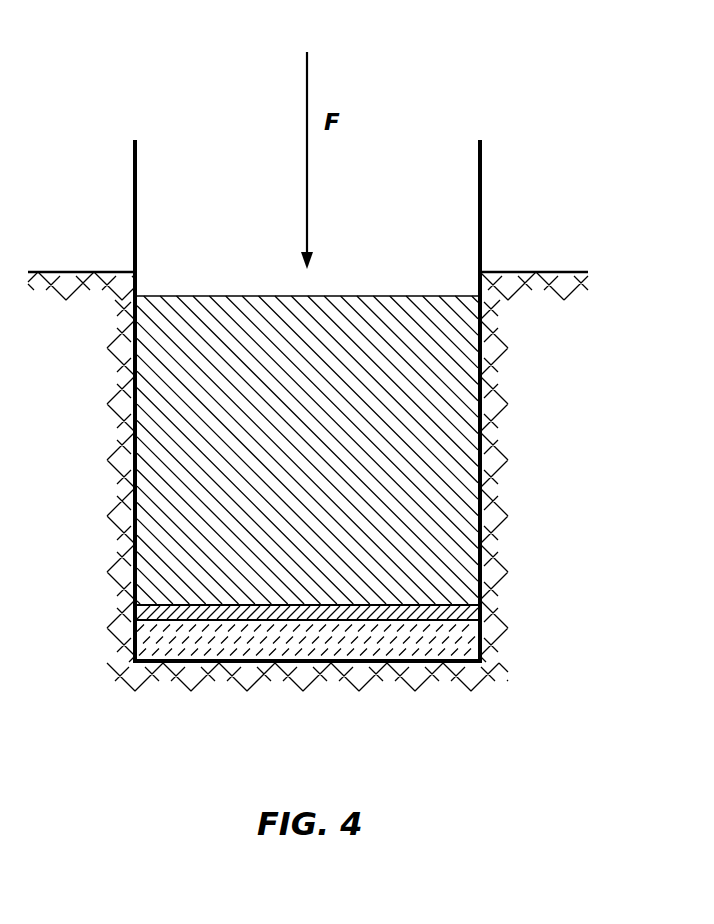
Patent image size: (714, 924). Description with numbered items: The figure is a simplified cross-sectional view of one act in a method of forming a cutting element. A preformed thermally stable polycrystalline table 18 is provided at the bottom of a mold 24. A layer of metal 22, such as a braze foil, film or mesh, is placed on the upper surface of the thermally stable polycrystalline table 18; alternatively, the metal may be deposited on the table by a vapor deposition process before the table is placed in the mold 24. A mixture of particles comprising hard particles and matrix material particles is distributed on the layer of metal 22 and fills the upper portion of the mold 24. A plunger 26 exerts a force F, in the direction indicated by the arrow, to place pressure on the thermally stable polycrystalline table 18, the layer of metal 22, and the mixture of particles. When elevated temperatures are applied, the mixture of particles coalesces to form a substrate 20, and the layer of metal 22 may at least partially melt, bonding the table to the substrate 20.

The thermally stable polycrystalline table 18 is at (455, 637).
The substrate 20 is at (432, 490).
The layer of metal 22 is at (465, 612).
The mold 24 is at (110, 514).
The plunger 26 is at (170, 200).